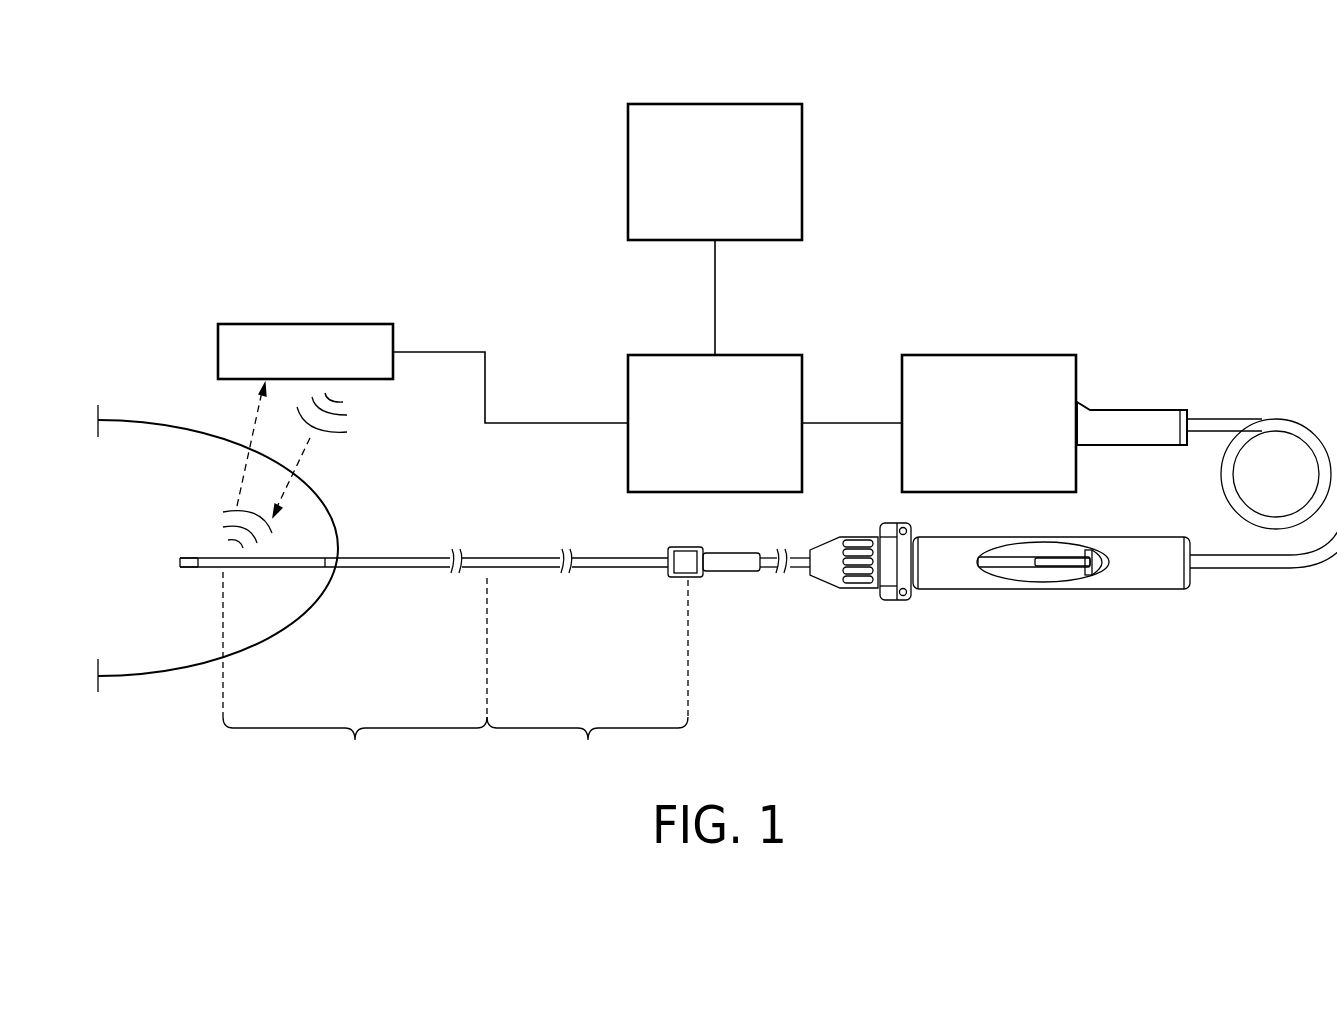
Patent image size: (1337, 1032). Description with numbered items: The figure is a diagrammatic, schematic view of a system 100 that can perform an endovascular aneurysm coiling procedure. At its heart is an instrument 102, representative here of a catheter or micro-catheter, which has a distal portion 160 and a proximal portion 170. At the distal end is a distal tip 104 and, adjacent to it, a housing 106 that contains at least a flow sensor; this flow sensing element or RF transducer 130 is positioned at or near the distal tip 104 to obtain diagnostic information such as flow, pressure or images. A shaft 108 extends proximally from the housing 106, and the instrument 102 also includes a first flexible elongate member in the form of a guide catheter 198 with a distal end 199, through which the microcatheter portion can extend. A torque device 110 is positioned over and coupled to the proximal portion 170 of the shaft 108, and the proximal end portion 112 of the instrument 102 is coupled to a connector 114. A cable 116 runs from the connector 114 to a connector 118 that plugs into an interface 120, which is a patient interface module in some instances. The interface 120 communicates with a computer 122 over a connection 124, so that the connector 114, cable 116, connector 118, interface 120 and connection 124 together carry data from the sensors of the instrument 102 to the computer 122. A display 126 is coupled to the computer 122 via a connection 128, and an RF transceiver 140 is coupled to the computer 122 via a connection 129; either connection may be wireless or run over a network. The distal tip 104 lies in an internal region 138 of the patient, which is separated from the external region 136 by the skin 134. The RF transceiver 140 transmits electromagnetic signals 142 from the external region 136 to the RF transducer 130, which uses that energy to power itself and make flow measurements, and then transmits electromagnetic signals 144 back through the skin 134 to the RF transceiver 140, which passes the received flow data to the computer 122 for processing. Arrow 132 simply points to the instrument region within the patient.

The system 100 is at (1248, 203).
The instrument 102 is at (541, 584).
The distal tip 104 is at (180, 562).
The housing 106 is at (185, 556).
The shaft 108 is at (402, 570).
The torque device 110 is at (720, 584).
The proximal end portion 112 is at (800, 571).
The connector 114 is at (990, 599).
The cable 116 is at (1308, 560).
The connector 118 is at (1143, 410).
The interface 120 is at (988, 354).
The computer 122 is at (665, 354).
The connection 124 is at (858, 423).
The display 126 is at (802, 146).
The connection 128 is at (715, 295).
The connection 129 is at (556, 423).
The RF transducer 130 is at (182, 573).
The tissue region 132 is at (370, 513).
The skin 134 is at (262, 646).
The external region 136 is at (148, 722).
The internal region 138 is at (148, 649).
The RF transceiver 140 is at (305, 324).
The electromagnetic signals 142 is at (345, 432).
The electromagnetic signals 144 is at (228, 511).
The distal portion 160 is at (455, 673).
The proximal portion 170 is at (587, 746).
The guide catheter 198 is at (262, 569).
The distal end 199 is at (200, 569).